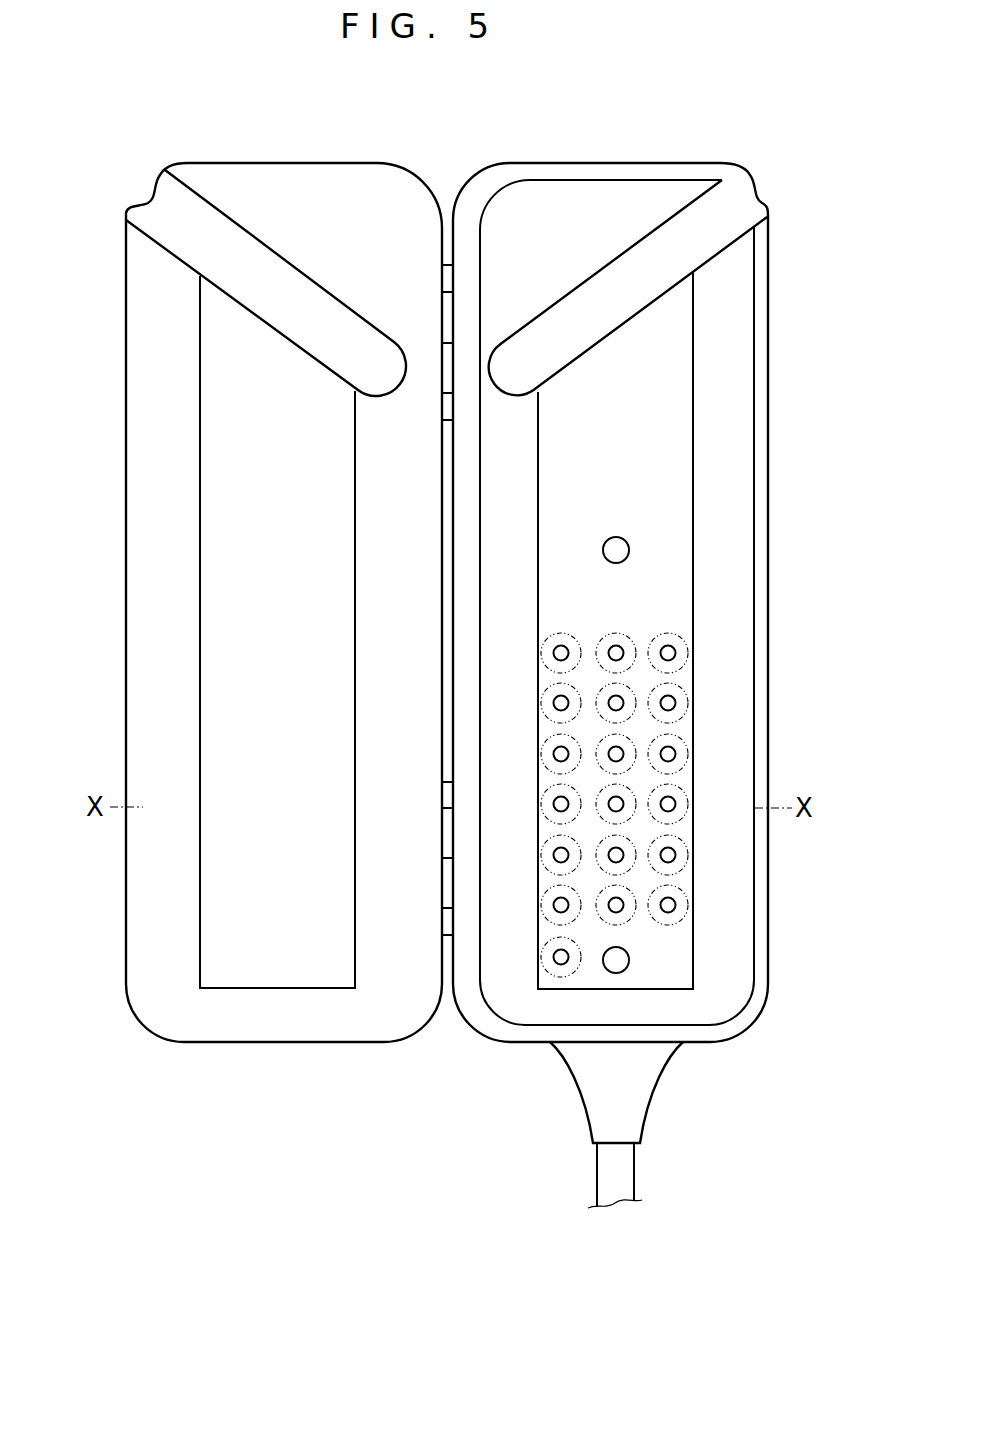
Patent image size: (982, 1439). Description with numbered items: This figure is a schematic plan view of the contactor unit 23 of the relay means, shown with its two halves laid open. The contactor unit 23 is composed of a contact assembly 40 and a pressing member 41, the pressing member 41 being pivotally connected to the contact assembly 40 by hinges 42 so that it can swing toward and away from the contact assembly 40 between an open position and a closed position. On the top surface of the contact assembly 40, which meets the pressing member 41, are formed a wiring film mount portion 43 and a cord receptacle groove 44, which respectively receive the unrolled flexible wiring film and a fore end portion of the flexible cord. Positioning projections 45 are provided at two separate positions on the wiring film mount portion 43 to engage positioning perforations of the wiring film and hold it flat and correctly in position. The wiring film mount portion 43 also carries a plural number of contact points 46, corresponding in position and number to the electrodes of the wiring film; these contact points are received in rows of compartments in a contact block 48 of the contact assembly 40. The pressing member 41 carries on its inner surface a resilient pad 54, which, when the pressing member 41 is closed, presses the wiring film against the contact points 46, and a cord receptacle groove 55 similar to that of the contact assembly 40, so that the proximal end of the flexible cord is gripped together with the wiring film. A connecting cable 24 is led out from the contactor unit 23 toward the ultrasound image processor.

The contactor unit 23 is at (440, 150).
The connecting cable 24 is at (605, 1177).
The contact assembly 40 is at (465, 1032).
The pressing member 41 is at (148, 1050).
The hinges 42 is at (445, 318).
The wiring film mount portion 43 is at (682, 352).
The cord receptacle groove 44 is at (675, 247).
The positioning projections 45 is at (618, 543).
The contact points 46 is at (672, 750).
The contact block 48 is at (736, 428).
The resilient pad 54 is at (268, 973).
The cord receptacle groove 55 is at (230, 245).